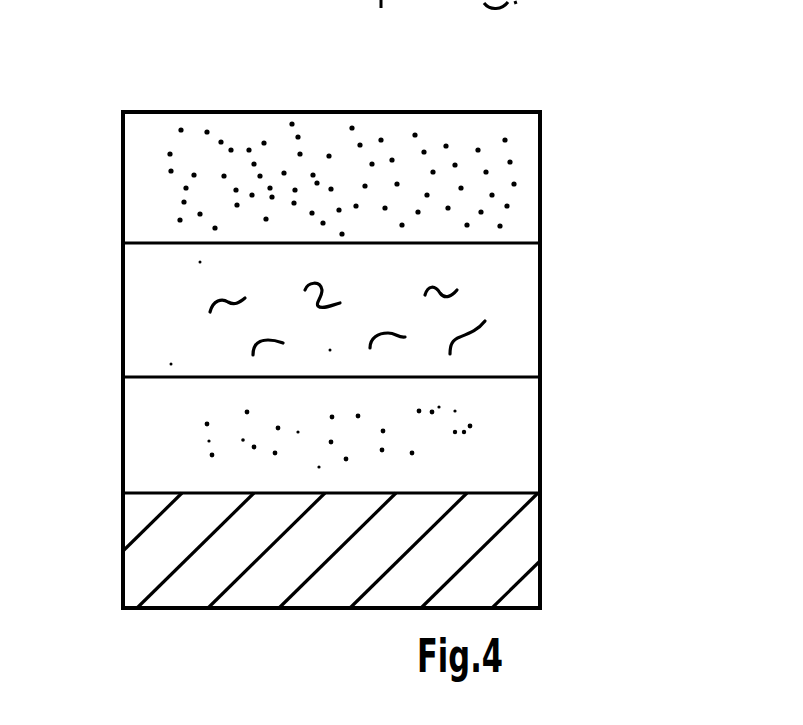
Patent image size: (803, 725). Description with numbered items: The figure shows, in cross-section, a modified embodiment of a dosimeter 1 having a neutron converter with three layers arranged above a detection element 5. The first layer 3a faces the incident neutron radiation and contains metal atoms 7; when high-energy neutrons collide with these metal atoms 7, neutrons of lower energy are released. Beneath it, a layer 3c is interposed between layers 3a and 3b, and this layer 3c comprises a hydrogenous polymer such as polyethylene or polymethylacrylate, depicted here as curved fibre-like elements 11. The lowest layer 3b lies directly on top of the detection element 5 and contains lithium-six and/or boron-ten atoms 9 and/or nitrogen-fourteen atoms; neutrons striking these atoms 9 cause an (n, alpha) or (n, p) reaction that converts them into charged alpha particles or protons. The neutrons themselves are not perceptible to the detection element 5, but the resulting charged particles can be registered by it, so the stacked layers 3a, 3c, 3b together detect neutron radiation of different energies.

The layered structure 1 is at (380, 0).
The first layer 3a is at (540, 180).
The layer 3b is at (542, 425).
The layer 3c is at (540, 303).
The detection element 5 is at (540, 537).
The metal atoms 7 is at (498, 140).
The 6Li atoms and/or 10B atoms 9 is at (172, 448).
The fibers 11 is at (175, 312).